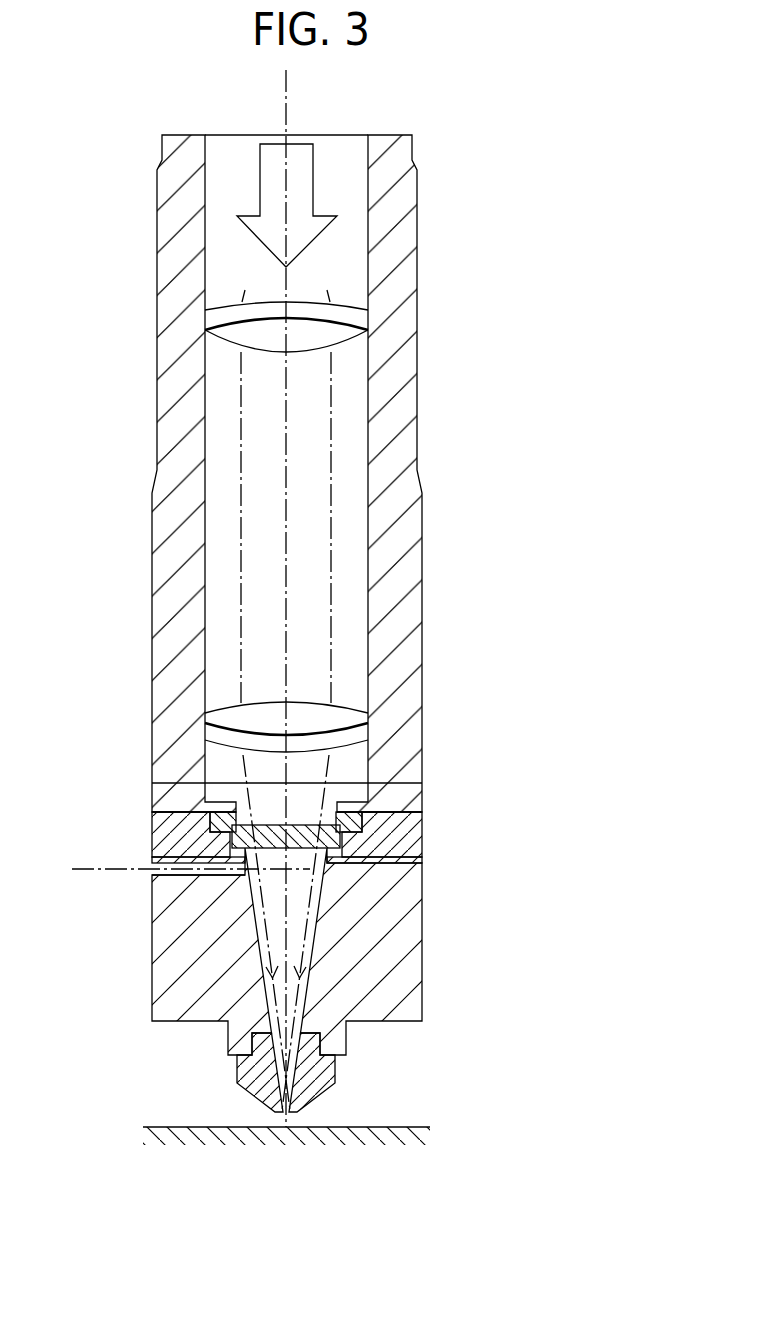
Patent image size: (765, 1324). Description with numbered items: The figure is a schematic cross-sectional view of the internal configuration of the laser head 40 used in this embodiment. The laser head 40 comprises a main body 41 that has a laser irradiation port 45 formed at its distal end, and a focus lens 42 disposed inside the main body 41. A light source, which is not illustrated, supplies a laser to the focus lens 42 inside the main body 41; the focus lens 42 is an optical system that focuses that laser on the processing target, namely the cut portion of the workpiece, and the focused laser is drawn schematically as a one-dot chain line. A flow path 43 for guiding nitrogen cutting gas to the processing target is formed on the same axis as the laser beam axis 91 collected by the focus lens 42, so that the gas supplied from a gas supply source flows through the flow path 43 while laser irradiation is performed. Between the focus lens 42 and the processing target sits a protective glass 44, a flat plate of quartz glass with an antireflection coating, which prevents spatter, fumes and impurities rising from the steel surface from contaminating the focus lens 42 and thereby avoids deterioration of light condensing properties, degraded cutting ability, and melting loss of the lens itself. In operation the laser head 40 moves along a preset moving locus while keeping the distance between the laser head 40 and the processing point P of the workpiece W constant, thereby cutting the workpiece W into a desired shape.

The laser head 40 is at (356, 670).
The main body 41 is at (417, 230).
The focus lens 42 is at (357, 735).
The flow path 43 is at (262, 932).
The protective glass 44 is at (305, 835).
The laser irradiation port 45 is at (284, 1110).
The laser beam axis 91 is at (287, 630).
The processing point P is at (312, 1120).
The workpiece W is at (417, 1127).